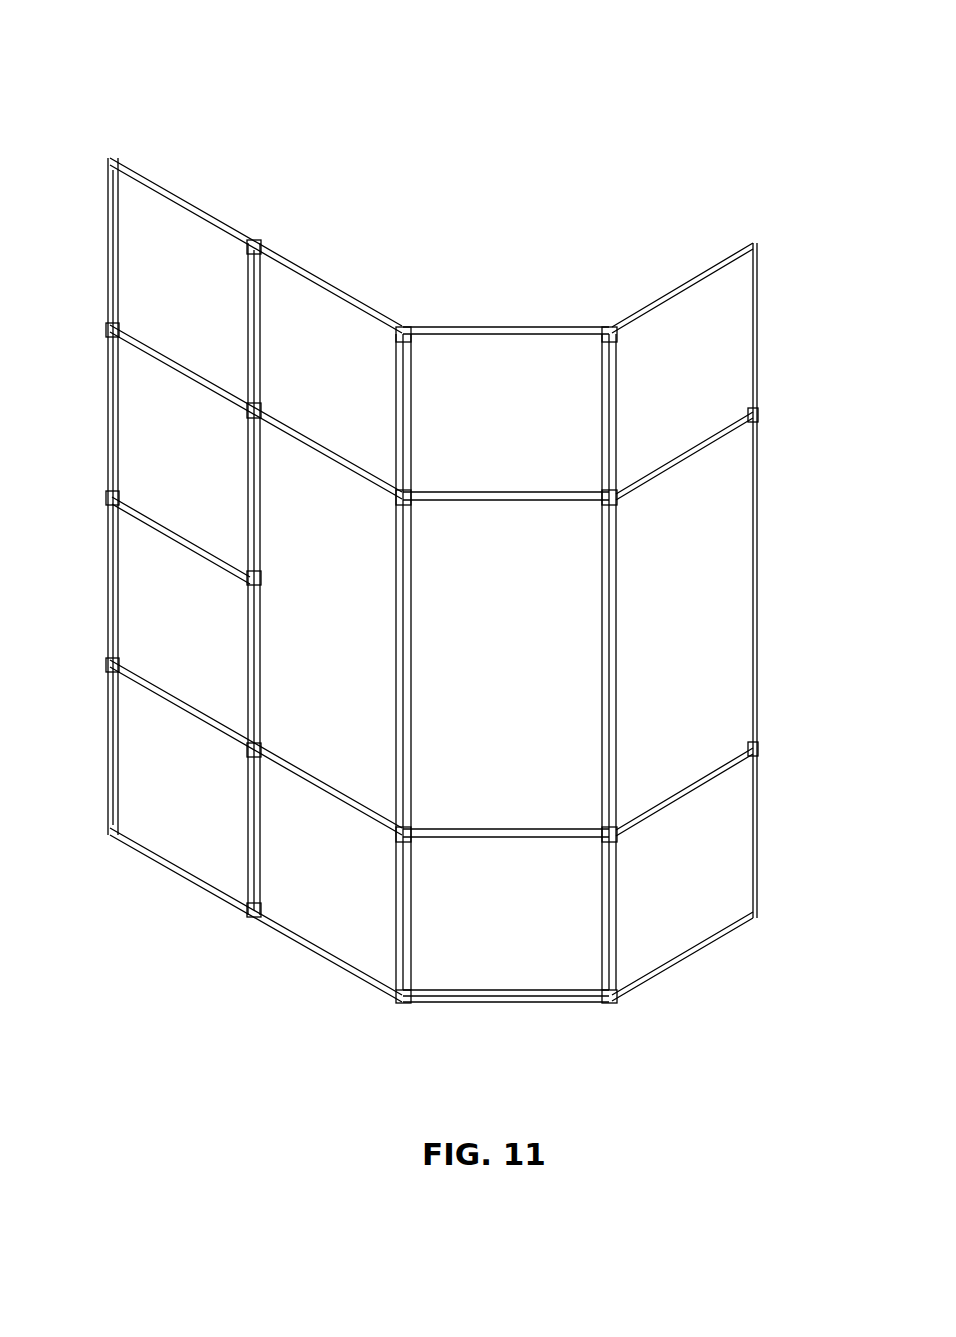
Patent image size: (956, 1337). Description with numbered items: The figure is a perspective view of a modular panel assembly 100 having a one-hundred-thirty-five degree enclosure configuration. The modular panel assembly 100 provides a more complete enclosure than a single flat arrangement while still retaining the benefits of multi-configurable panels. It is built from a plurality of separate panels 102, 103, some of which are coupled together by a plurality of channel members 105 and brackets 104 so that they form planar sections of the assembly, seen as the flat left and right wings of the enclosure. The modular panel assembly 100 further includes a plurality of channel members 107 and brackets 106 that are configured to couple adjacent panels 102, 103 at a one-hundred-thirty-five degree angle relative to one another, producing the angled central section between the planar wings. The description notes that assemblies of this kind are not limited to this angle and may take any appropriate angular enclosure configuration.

The modular panel assembly 100 is at (168, 72).
The panel 102 is at (167, 223).
The panel 103 is at (572, 525).
The bracket 104 is at (108, 498).
The channel member 105 is at (702, 448).
The bracket 106 is at (405, 327).
The channel member 107 is at (400, 590).